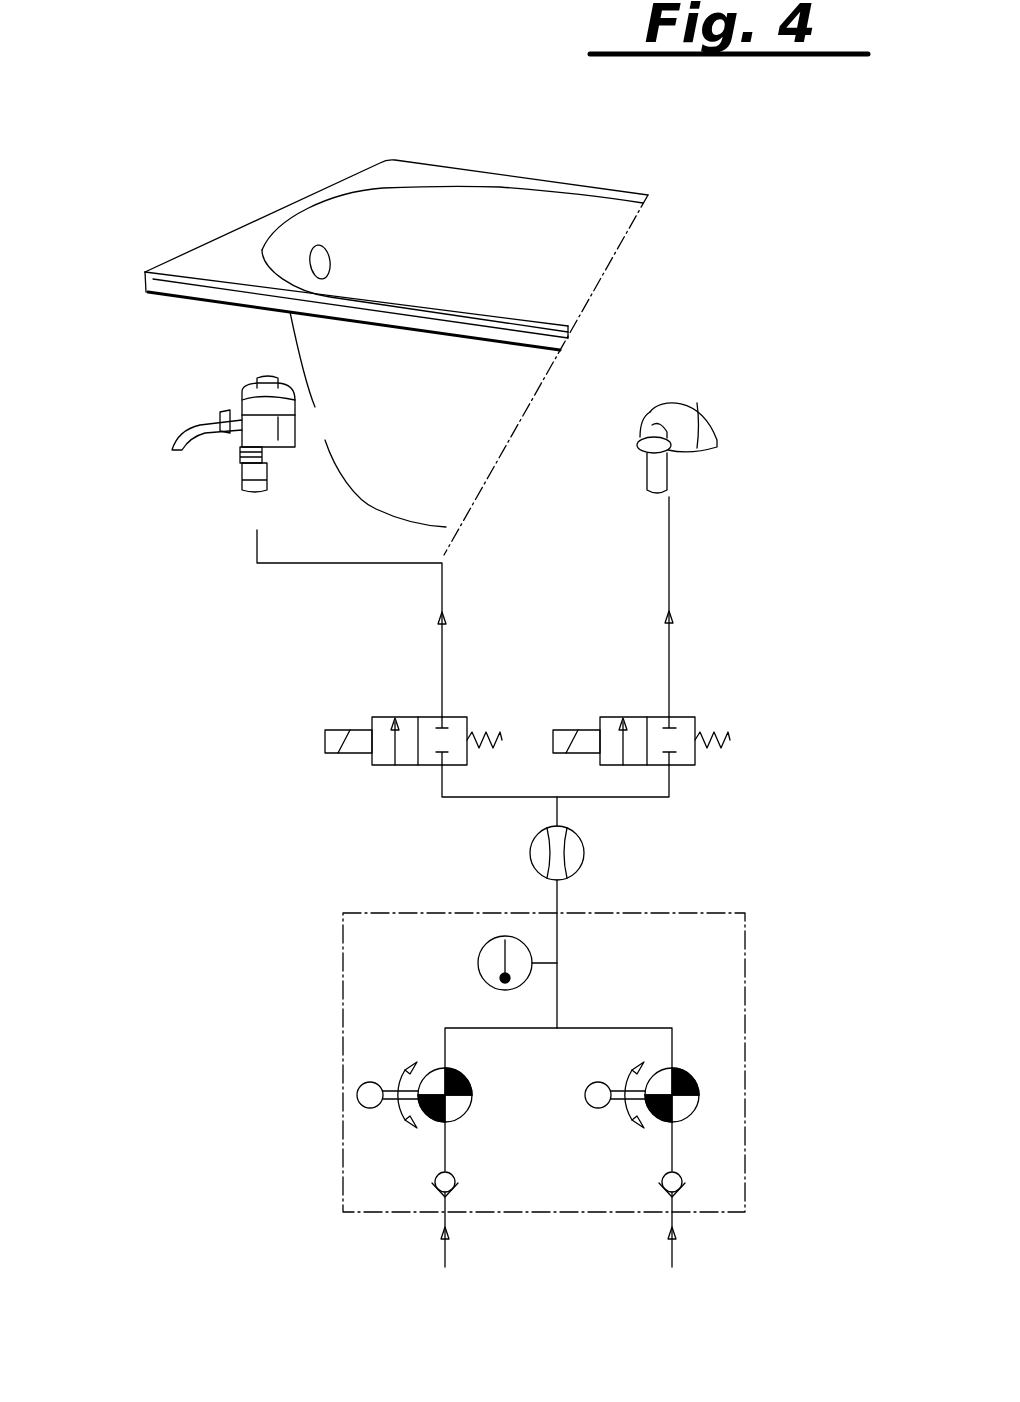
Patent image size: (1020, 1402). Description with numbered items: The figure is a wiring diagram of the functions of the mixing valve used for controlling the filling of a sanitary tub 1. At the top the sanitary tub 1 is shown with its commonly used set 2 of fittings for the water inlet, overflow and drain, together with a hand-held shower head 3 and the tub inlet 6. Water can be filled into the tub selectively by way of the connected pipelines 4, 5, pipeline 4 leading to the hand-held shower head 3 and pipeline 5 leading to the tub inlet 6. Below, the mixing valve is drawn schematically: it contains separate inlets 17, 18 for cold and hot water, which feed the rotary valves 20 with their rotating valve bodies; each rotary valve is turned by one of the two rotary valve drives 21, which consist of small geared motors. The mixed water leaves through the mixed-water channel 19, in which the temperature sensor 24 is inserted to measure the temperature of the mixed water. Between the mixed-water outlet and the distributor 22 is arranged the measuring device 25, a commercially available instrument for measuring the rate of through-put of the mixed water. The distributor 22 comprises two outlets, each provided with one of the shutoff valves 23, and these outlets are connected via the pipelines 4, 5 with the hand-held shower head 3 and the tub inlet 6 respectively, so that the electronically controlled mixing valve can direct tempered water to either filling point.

The sanitary tub 1 is at (425, 230).
The set of fittings 2 is at (205, 387).
The hand-held shower head 3 is at (700, 402).
The pipeline 4 is at (669, 573).
The pipeline 5 is at (442, 585).
The tub inlet 6 is at (260, 380).
The inlet for cold water 17 is at (445, 1253).
The inlet for hot water 18 is at (672, 1253).
The mixed-water channel 19 is at (560, 992).
The rotary valves 20 is at (657, 1132).
The rotary valve drives 21 is at (352, 1092).
The distributor 22 is at (567, 805).
The shutoff valves 23 is at (602, 705).
The temperature sensor 24 is at (478, 955).
The measuring device for rate of through-put 25 is at (532, 848).